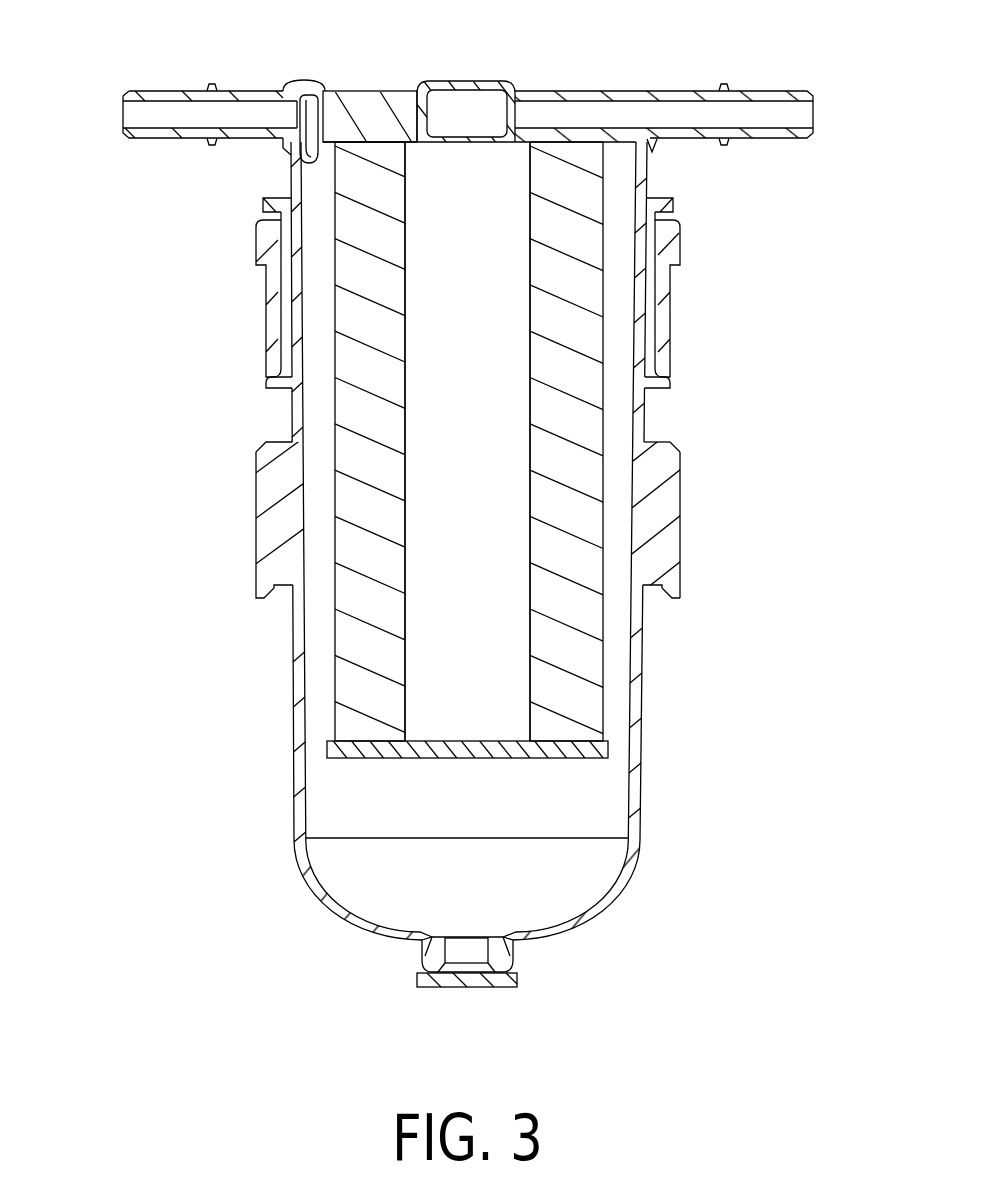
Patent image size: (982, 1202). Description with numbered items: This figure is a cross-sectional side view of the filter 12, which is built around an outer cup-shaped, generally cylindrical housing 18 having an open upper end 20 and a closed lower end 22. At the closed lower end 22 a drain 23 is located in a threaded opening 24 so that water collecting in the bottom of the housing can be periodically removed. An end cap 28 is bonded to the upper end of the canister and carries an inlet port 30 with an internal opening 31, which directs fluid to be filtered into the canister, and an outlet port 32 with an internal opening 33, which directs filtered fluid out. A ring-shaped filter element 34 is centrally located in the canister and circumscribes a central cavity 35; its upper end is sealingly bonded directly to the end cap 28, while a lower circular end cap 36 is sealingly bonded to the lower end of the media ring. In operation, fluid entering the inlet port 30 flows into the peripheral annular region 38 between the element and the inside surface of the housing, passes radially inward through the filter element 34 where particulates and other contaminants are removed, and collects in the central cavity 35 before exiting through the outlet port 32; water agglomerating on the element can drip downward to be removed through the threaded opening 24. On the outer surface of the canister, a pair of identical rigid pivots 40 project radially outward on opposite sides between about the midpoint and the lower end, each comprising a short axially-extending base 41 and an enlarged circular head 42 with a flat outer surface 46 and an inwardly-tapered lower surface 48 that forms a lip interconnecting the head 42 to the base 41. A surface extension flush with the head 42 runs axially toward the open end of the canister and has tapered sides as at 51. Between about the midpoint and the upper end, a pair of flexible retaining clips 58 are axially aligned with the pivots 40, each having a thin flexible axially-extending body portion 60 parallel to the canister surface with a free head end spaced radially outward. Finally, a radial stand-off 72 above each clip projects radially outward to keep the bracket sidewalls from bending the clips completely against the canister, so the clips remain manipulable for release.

The filter 12 is at (640, 790).
The housing 18 is at (642, 700).
The open upper end 20 is at (282, 143).
The closed lower end 22 is at (350, 925).
The drain 23 is at (428, 988).
The threaded opening 24 is at (477, 953).
The end cap 28 is at (572, 92).
The inlet port 30 is at (123, 106).
The internal opening 31 is at (318, 158).
The outlet port 32 is at (813, 117).
The internal opening 33 is at (488, 130).
The filter element 34 is at (355, 636).
The central cavity 35 is at (450, 475).
The lower circular end cap 36 is at (403, 757).
The peripheral annular region 38 is at (322, 406).
The pivot 40 is at (481, 506).
The base 41 is at (650, 440).
The head 42 is at (682, 590).
The flat outer surface 46 is at (682, 548).
The angled lower surface 48 is at (662, 598).
The tapered sides 51 is at (672, 442).
The retaining clip 58 is at (683, 231).
The body portion 60 is at (670, 324).
The radial stand-off 72 is at (658, 205).